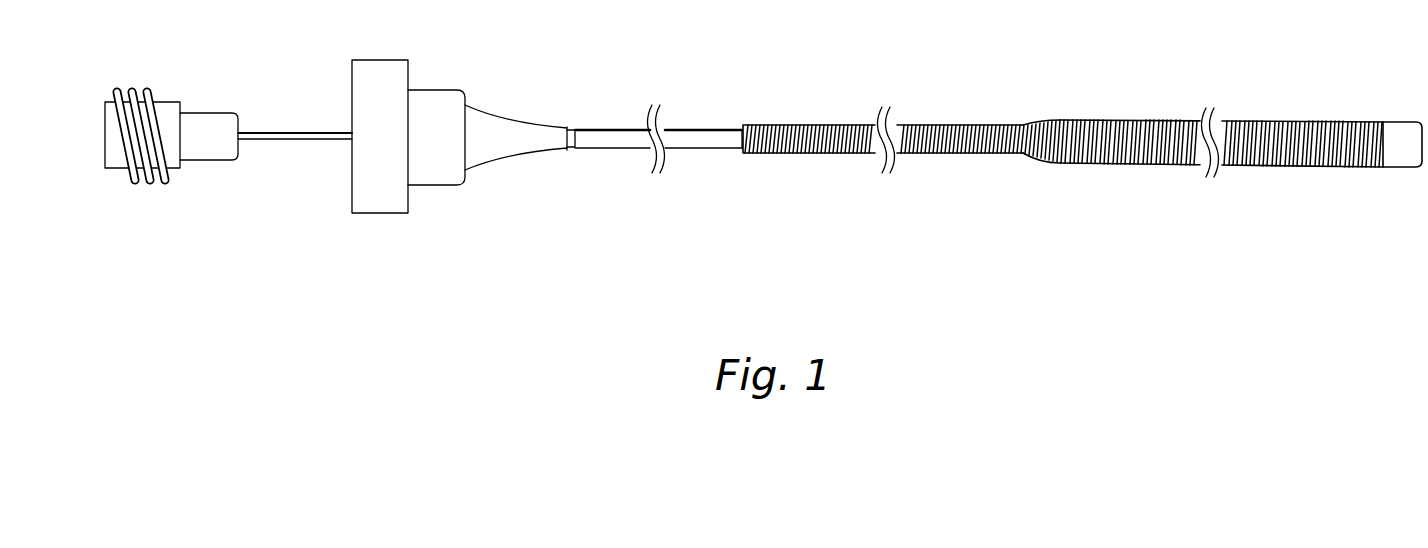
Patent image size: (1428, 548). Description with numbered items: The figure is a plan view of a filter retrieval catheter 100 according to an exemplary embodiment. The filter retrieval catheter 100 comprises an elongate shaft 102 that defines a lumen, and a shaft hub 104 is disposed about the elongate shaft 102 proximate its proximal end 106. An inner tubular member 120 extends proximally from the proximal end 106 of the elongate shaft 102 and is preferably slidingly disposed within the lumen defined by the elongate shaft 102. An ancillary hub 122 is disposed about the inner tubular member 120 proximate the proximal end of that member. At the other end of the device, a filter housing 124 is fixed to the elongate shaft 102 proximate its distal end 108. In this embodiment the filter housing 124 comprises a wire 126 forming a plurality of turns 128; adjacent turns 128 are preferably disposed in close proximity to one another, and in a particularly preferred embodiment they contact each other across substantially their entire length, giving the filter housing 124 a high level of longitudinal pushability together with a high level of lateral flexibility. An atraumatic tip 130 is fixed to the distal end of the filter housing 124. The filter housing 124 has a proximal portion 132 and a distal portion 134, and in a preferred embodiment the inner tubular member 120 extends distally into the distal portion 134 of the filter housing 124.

The filter retrieval catheter 100 is at (1058, 203).
The elongate shaft 102 is at (690, 140).
The shaft hub 104 is at (515, 120).
The proximal end 106 is at (575, 101).
The distal end 108 is at (752, 110).
The inner tubular member 120 is at (310, 135).
The ancillary hub 122 is at (167, 102).
The filter housing 124 is at (1042, 162).
The wire 126 is at (1023, 125).
The turns 128 is at (1107, 130).
The atraumatic tip 130 is at (1400, 122).
The proximal portion 132 is at (945, 170).
The distal portion 134 is at (1292, 183).